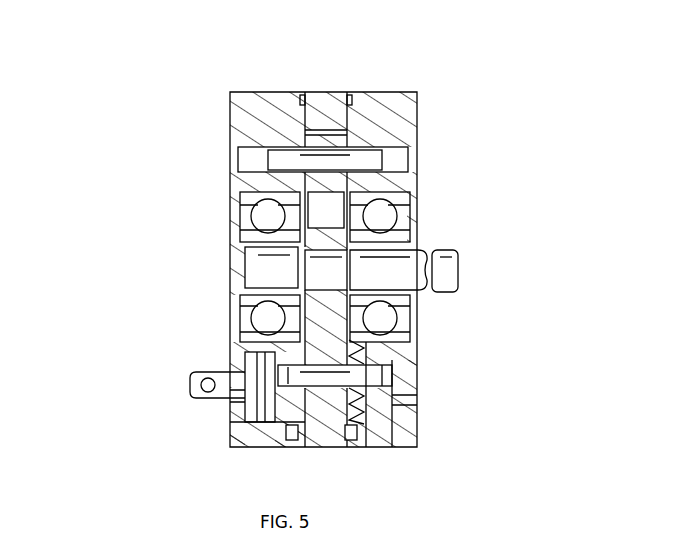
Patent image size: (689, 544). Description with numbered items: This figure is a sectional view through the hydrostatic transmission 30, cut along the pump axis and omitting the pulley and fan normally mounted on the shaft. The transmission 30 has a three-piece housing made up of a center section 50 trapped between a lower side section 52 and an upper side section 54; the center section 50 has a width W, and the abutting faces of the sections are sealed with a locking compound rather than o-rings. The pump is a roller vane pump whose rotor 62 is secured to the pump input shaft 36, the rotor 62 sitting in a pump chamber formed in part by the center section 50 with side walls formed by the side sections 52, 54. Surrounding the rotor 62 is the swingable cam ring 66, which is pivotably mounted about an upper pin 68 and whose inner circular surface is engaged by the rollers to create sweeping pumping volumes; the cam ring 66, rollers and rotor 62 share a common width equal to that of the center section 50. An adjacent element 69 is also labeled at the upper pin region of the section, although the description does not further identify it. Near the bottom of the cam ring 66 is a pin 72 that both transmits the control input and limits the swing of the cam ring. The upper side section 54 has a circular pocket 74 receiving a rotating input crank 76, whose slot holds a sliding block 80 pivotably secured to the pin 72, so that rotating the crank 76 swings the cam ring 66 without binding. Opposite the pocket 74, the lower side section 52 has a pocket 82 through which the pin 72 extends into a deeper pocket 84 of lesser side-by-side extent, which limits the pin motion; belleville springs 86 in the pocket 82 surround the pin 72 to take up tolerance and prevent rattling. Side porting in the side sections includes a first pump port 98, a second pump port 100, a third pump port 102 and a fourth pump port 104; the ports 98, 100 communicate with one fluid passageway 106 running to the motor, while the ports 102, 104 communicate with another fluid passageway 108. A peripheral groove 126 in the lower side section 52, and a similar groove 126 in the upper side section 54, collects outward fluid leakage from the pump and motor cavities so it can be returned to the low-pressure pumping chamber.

The hydrostatic transmission 30 is at (533, 81).
The pump input shaft 36 is at (458, 269).
The center section 50 is at (325, 91).
The lower side section 52 is at (396, 433).
The upper side section 54 is at (231, 92).
The rotor 62 is at (245, 253).
The cam ring 66 is at (350, 140).
The upper pin 68 is at (408, 168).
The bearing ring 69 is at (240, 158).
The pin 72 is at (382, 390).
The circular pocket 74 is at (286, 436).
The input crank 76 is at (227, 405).
The sliding block 80 is at (247, 435).
The pocket 82 is at (363, 423).
The deeper pocket 84 is at (398, 384).
The belleville springs 86 is at (395, 405).
The first pump port 98 is at (262, 197).
The second pump port 100 is at (243, 240).
The third pump port 102 is at (258, 300).
The fourth pump port 104 is at (258, 338).
The fluid passageway 106 is at (251, 213).
The fluid passageway 108 is at (258, 310).
The groove 126 is at (293, 92).